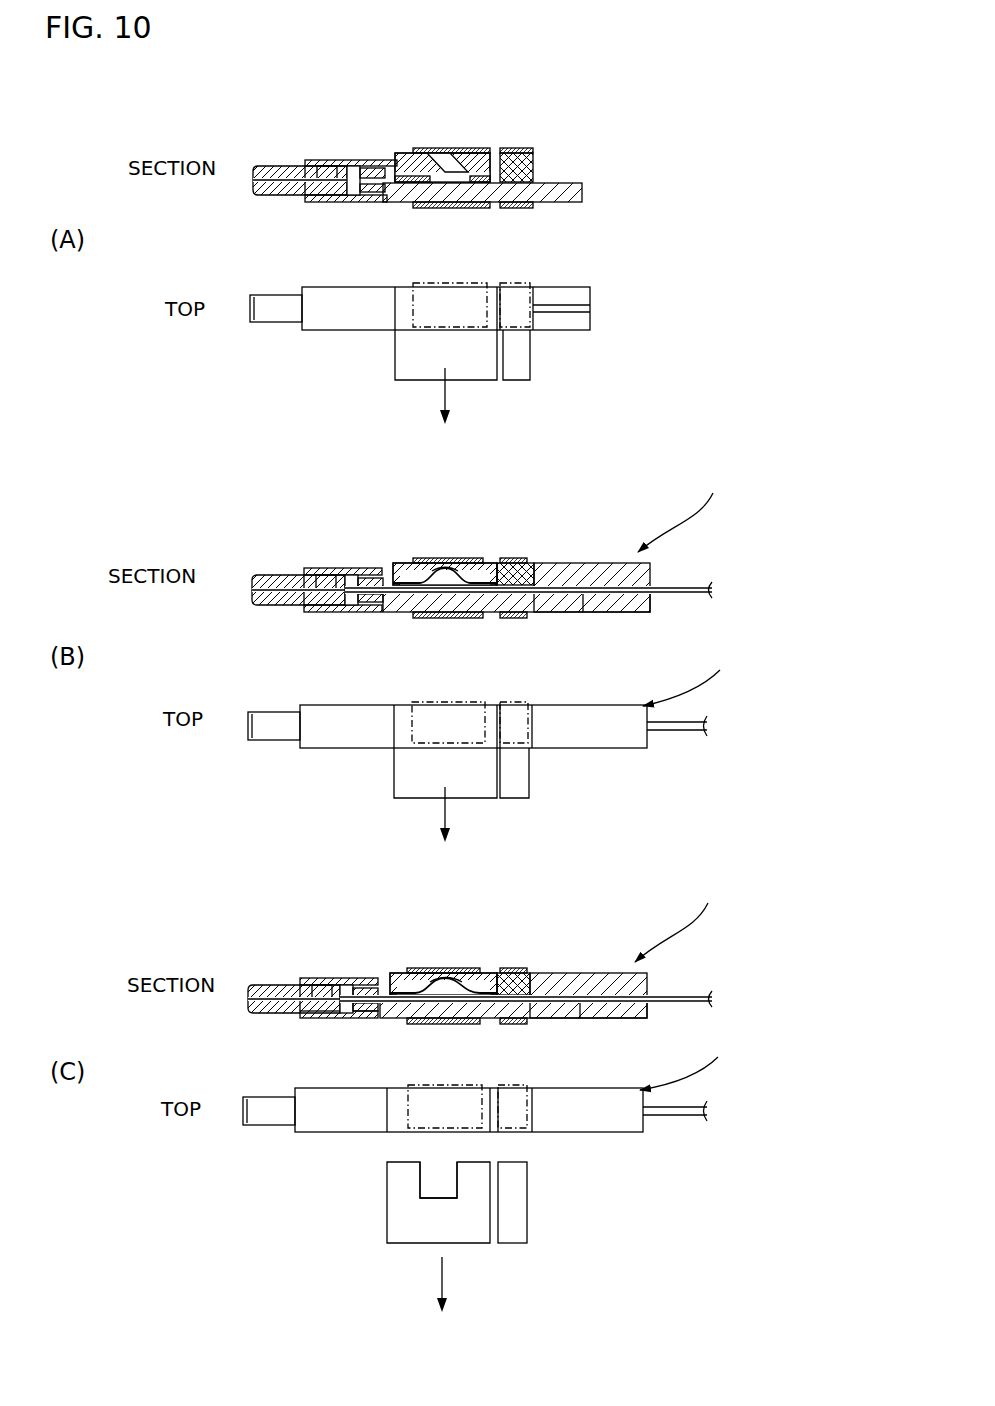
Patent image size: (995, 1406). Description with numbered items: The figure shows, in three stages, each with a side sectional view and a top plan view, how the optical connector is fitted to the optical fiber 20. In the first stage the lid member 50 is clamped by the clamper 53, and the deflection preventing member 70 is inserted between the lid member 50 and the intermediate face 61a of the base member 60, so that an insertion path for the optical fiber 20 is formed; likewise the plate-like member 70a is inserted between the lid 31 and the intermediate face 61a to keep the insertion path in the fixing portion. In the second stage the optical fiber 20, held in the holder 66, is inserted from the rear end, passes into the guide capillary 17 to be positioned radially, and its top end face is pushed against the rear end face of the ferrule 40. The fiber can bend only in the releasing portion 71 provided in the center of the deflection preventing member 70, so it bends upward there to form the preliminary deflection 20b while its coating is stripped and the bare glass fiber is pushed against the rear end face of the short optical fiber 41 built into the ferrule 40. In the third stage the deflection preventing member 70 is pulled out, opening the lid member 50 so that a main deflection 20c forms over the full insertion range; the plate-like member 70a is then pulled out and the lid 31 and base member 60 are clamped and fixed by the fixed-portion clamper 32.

The guide capillary 17 is at (362, 607).
The optical fiber 20 is at (715, 583).
The preliminary deflection 20b is at (446, 563).
The main deflection 20c is at (445, 973).
The lid 31 is at (512, 150).
The fixed-portion clamper 32 is at (524, 150).
The ferrule 40 is at (280, 160).
The short optical fiber 41 is at (262, 195).
The lid member 50 is at (480, 150).
The clamper 53 is at (430, 152).
The base member 60 is at (345, 158).
The intermediate face 61a is at (572, 190).
The holder 66 is at (690, 779).
The deflection preventing member 70 is at (430, 148).
The plate-like member 70a is at (540, 155).
The releasing portion 71 is at (478, 148).